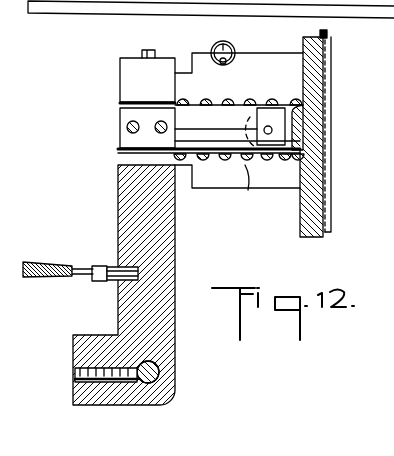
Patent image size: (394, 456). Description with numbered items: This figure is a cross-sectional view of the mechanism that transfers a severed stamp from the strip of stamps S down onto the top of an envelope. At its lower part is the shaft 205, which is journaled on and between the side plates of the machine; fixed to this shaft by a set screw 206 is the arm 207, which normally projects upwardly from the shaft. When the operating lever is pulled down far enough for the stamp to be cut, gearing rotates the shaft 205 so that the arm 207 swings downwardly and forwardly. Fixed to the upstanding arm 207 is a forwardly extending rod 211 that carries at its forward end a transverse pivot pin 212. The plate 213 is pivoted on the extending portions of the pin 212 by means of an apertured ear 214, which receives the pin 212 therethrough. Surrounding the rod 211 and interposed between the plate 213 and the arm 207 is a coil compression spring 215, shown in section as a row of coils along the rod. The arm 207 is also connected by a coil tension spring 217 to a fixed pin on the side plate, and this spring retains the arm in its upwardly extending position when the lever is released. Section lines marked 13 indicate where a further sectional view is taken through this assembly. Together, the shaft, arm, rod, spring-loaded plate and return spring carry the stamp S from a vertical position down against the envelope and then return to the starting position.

The section line 13- 13 is at (100, 33).
The stamps S is at (322, 27).
The shaft 205 is at (158, 370).
The set screw 206 is at (75, 378).
The arm 207 is at (172, 278).
The rod 211 is at (213, 122).
The pivot pin 212 is at (267, 127).
The plate 213 is at (321, 37).
The apertured ear 214 is at (290, 123).
The coil compression spring 215 is at (248, 190).
The coil tension spring 217 is at (53, 263).